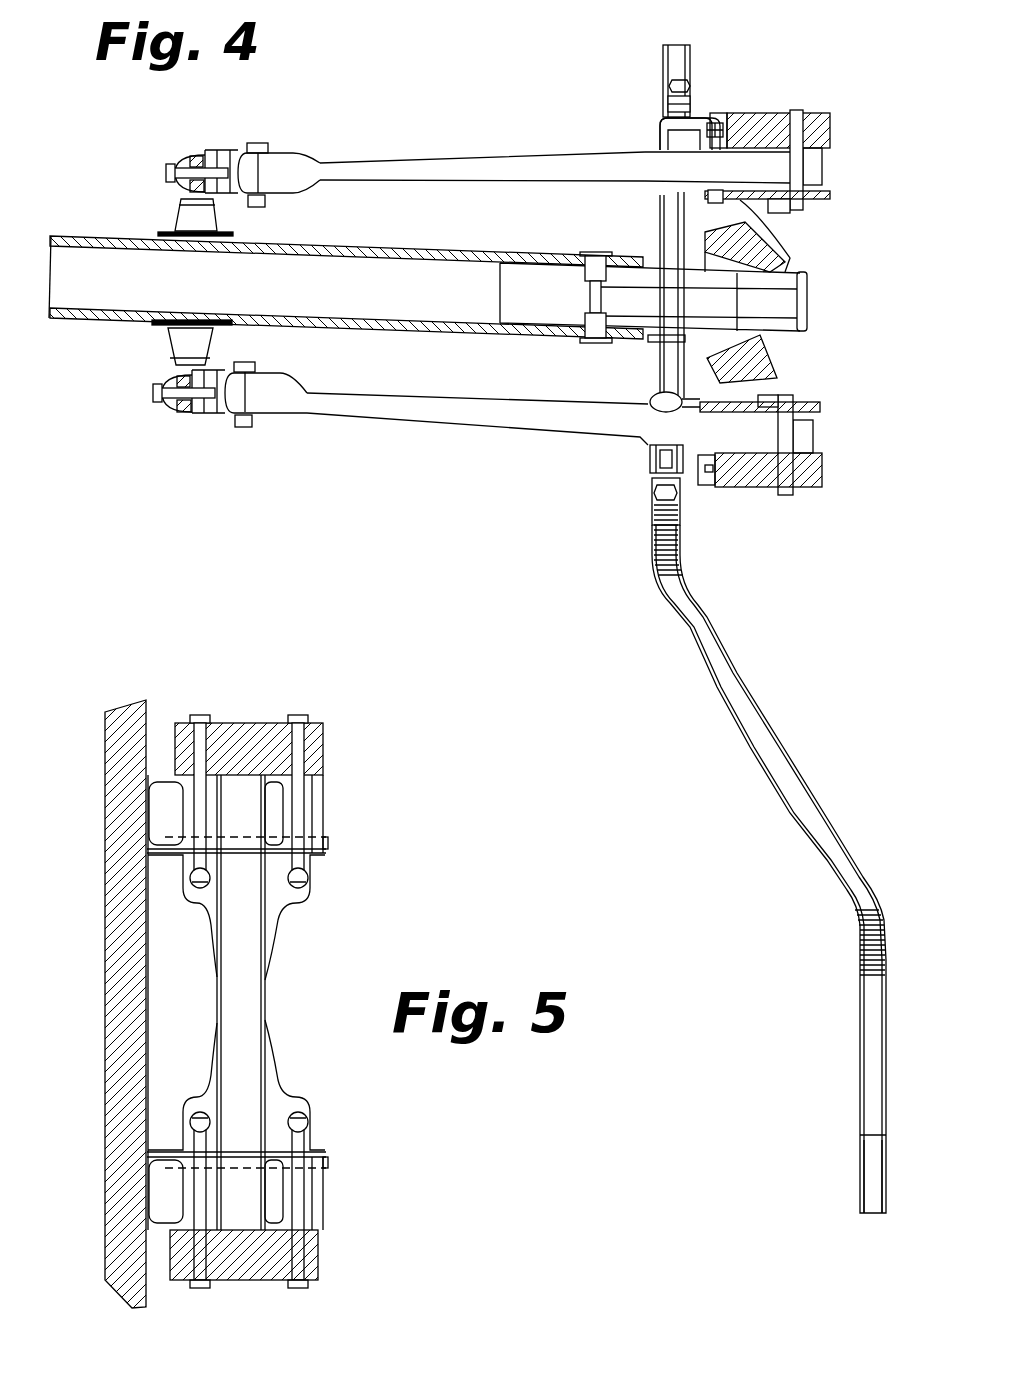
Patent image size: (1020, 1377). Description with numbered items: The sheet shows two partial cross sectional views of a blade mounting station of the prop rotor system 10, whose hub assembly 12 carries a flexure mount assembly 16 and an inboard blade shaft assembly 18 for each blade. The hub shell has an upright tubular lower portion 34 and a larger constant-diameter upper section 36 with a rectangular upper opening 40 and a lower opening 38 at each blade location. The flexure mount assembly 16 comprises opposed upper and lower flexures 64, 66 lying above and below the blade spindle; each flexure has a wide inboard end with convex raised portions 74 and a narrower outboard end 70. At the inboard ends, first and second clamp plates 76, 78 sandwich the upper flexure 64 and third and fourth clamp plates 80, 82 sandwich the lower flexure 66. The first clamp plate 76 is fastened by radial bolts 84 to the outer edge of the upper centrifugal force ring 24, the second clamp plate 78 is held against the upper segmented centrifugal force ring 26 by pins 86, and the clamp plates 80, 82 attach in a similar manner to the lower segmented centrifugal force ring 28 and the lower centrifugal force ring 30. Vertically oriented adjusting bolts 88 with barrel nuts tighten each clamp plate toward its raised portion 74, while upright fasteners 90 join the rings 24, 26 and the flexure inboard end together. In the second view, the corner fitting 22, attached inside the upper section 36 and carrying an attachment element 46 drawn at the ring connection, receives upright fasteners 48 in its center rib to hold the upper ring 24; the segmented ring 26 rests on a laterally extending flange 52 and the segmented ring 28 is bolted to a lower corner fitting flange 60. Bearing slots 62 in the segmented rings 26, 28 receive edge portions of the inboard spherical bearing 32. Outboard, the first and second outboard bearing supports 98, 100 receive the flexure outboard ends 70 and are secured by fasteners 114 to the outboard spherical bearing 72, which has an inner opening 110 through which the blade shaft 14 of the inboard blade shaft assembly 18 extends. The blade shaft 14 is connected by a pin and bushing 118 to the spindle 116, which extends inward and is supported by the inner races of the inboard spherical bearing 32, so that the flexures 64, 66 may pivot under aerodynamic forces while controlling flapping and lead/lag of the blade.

In FIG. 4, the prop rotor system 10 is at (466, 561).
In FIG. 4, the hub assembly 12 is at (714, 697).
In FIG. 4, the blade shaft 14 is at (86, 324).
In FIG. 4, the flexure mount assembly 16 is at (313, 425).
In FIG. 4, the inboard blade shaft assembly 18 is at (503, 362).
In FIG. 5, the corner fitting 22 is at (268, 995).
In FIG. 4, the upper centrifugal force ring 24 is at (830, 128).
In FIG. 5, the upper centrifugal force ring 24 is at (325, 748).
In FIG. 4, the upper segmented centrifugal force ring 26 is at (830, 196).
In FIG. 5, the upper segmented centrifugal force ring 26 is at (328, 842).
In FIG. 4, the lower segmented centrifugal force ring 28 is at (822, 406).
In FIG. 5, the lower segmented centrifugal force ring 28 is at (328, 1170).
In FIG. 4, the lower centrifugal force ring 30 is at (822, 470).
In FIG. 5, the lower centrifugal force ring 30 is at (318, 1255).
In FIG. 4, the inboard spherical bearing 32 is at (812, 252).
In FIG. 4, the lower portion 34 is at (865, 1082).
In FIG. 4, the upper section 36 is at (663, 68).
In FIG. 5, the upper section 36 is at (110, 926).
In FIG. 4, the lower opening 38 is at (652, 500).
In FIG. 4, the upper opening 40 is at (665, 112).
In FIG. 5, the bracket flange 46 is at (160, 773).
In FIG. 5, the upright fastener 48 is at (207, 722).
In FIG. 5, the flange 52 is at (320, 855).
In FIG. 5, the lower corner fitting flange 60 is at (318, 1152).
In FIG. 4, the bearing slot 62 is at (785, 212).
In FIG. 4, the upper flexure 64 is at (438, 160).
In FIG. 4, the lower flexure 66 is at (478, 412).
In FIG. 4, the outboard end 70 is at (286, 164).
In FIG. 4, the outboard spherical bearing 72 is at (180, 192).
In FIG. 4, the raised portion 74 is at (665, 158).
In FIG. 4, the first clamp plate 76 is at (700, 124).
In FIG. 4, the second clamp plate 78 is at (255, 143).
In FIG. 4, the third clamp plate 80 is at (652, 402).
In FIG. 4, the fourth clamp plate 82 is at (650, 458).
In FIG. 4, the bolt 84 is at (723, 130).
In FIG. 4, the pin 86 is at (755, 228).
In FIG. 4, the adjusting bolt 88 is at (679, 80).
In FIG. 4, the upright fastener 90 is at (796, 108).
In FIG. 4, the first outboard bearing support 98 is at (220, 150).
In FIG. 4, the second outboard bearing support 100 is at (215, 416).
In FIG. 4, the inner opening 110 is at (175, 322).
In FIG. 4, the fastener 114 is at (188, 162).
In FIG. 4, the spindle 116 is at (520, 318).
In FIG. 4, the pin and bushing 118 is at (592, 296).